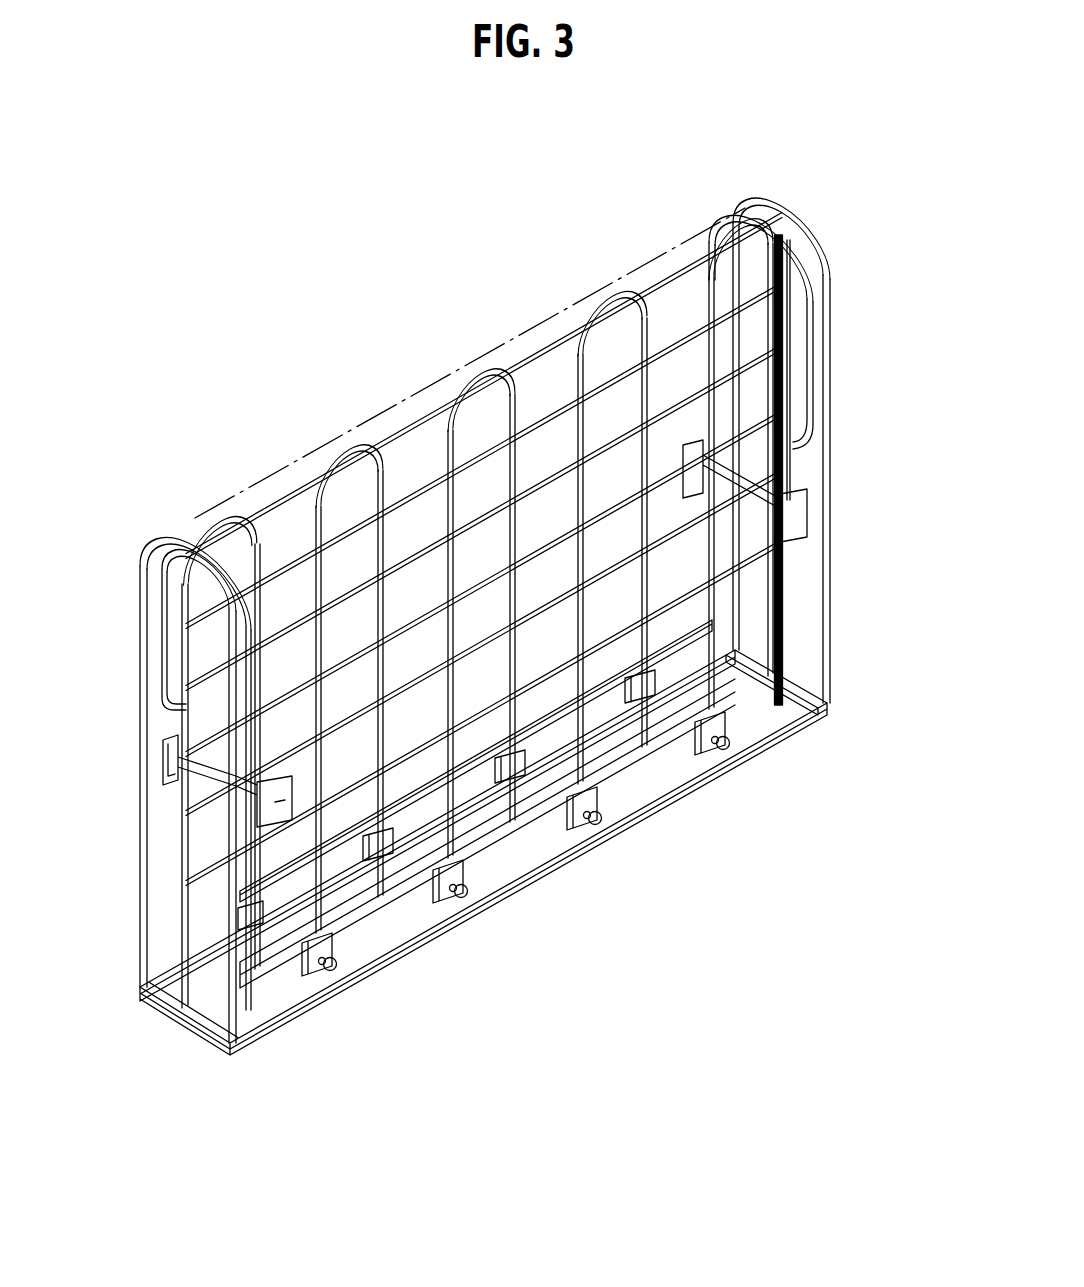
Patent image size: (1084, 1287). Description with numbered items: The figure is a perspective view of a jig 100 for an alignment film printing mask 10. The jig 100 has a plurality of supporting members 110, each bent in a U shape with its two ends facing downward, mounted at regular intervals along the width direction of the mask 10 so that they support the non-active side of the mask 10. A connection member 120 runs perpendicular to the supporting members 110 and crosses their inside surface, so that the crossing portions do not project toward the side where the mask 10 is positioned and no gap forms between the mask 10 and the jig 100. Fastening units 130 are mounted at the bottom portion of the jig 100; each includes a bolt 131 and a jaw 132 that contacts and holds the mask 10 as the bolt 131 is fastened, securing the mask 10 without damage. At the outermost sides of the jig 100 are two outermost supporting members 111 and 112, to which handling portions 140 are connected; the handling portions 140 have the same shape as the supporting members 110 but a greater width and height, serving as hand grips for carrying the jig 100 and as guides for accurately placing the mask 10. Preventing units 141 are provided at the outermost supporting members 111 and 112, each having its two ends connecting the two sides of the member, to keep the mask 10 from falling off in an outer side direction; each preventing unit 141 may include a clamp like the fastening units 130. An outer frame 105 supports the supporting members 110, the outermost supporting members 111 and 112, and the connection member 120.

The mask 10 is at (556, 645).
The jig 100 is at (490, 654).
The outer frame 105 is at (202, 1032).
The supporting members 110 is at (383, 927).
The outermost supporting member 111 is at (783, 378).
The outermost supporting member 112 is at (257, 947).
The connection member 120 is at (787, 685).
The fastening units 130 is at (584, 844).
The bolt 131 is at (728, 748).
The jaw 132 is at (727, 726).
The handling portions 140 is at (812, 316).
The preventing units 141 is at (255, 808).